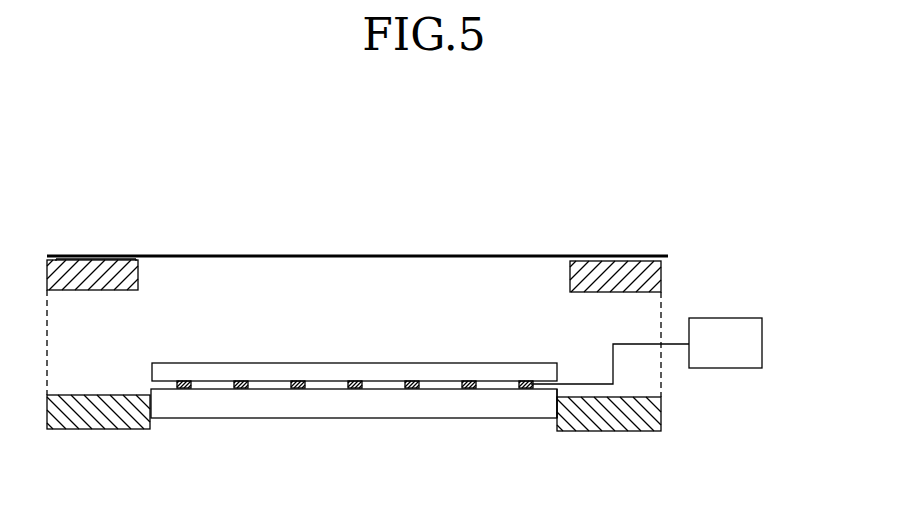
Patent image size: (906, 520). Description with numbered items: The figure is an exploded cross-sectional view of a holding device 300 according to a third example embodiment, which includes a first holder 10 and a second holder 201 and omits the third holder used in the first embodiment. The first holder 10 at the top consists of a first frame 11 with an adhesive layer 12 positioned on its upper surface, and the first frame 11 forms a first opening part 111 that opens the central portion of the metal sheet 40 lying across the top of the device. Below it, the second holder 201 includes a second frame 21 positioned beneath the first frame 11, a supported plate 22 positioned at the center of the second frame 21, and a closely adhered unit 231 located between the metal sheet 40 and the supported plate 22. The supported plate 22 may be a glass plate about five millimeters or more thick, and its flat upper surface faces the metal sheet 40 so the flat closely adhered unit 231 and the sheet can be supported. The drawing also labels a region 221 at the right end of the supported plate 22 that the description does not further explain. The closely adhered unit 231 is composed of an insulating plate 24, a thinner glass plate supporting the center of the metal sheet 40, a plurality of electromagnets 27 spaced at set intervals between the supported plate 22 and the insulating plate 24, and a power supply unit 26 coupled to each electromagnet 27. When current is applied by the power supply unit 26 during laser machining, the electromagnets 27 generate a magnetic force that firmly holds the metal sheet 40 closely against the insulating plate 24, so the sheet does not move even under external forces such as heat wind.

The holding device 300 is at (256, 189).
The first holder 10 is at (663, 272).
The metal sheet 40 is at (353, 255).
The adhesive layer 12 is at (103, 258).
The first frame 11 is at (130, 277).
The first opening part 111 is at (569, 281).
The insulating plate 24 is at (353, 364).
The electromagnets 27 is at (412, 389).
The supported plate 22 is at (273, 407).
The end portion of base plate 221 is at (558, 420).
The second frame 21 is at (97, 420).
The second holder 201 is at (663, 414).
The power supply unit 26 is at (711, 356).
The closely adhered unit 231 is at (568, 197).